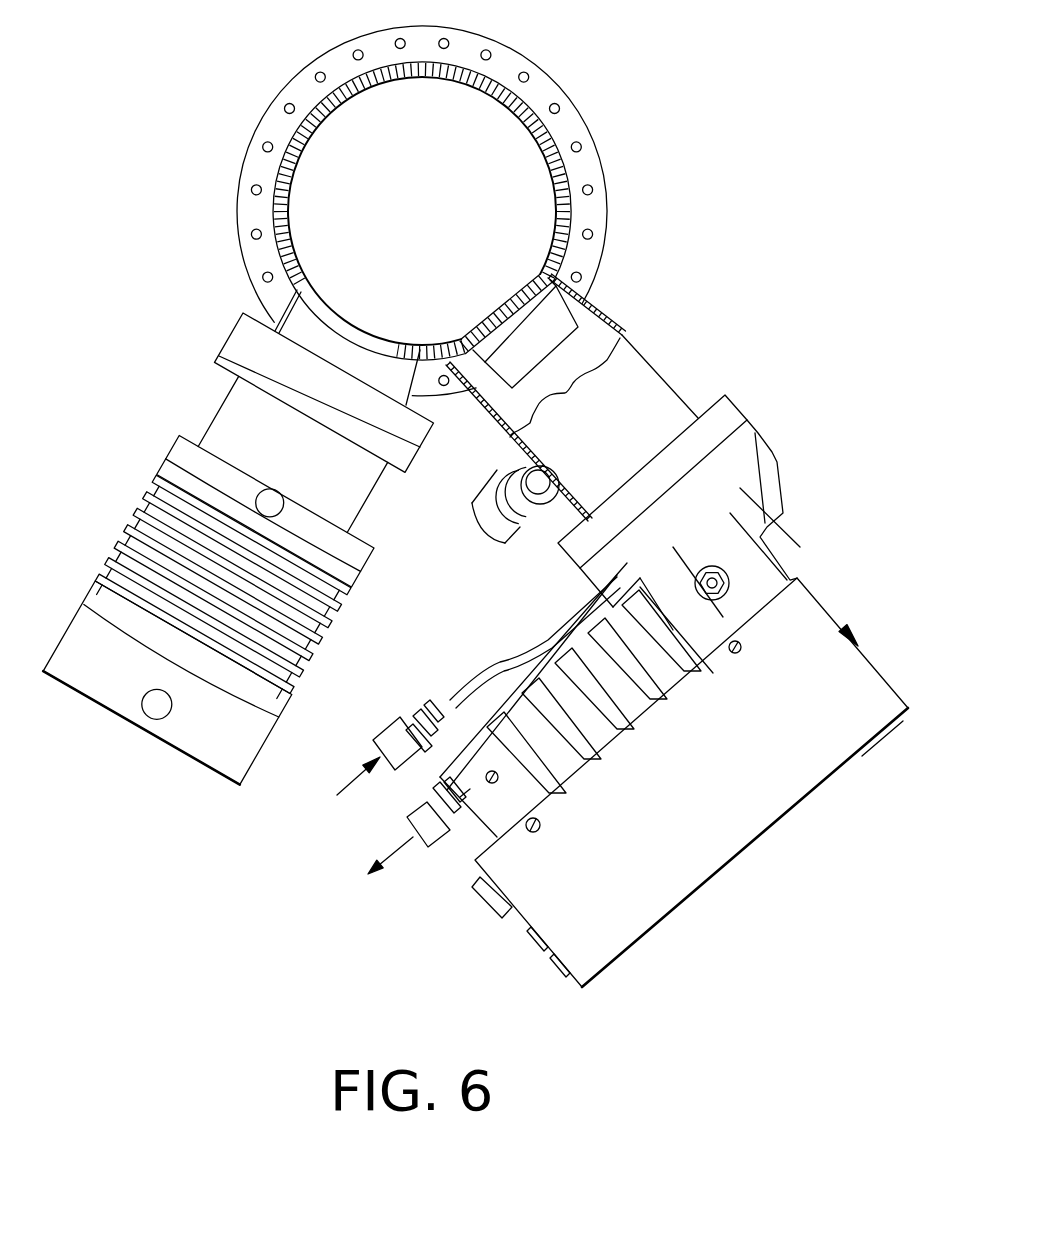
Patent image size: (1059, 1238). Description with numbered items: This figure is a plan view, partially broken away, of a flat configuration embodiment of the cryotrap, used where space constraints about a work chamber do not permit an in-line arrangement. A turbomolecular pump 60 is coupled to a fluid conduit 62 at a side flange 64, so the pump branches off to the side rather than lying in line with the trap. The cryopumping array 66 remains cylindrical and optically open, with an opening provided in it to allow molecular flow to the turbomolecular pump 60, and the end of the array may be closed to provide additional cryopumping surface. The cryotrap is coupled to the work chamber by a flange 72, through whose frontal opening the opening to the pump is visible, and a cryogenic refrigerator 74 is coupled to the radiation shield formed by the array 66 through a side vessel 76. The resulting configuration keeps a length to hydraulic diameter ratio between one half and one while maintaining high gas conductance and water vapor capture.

The turbomolecular pump 60 is at (132, 530).
The fluid conduit 62 is at (557, 137).
The side flange 64 is at (236, 322).
The cryopumping array 66 is at (295, 177).
The flange 72 is at (560, 82).
The cryogenic refrigerator 74 is at (703, 367).
The side vessel 76 is at (622, 333).